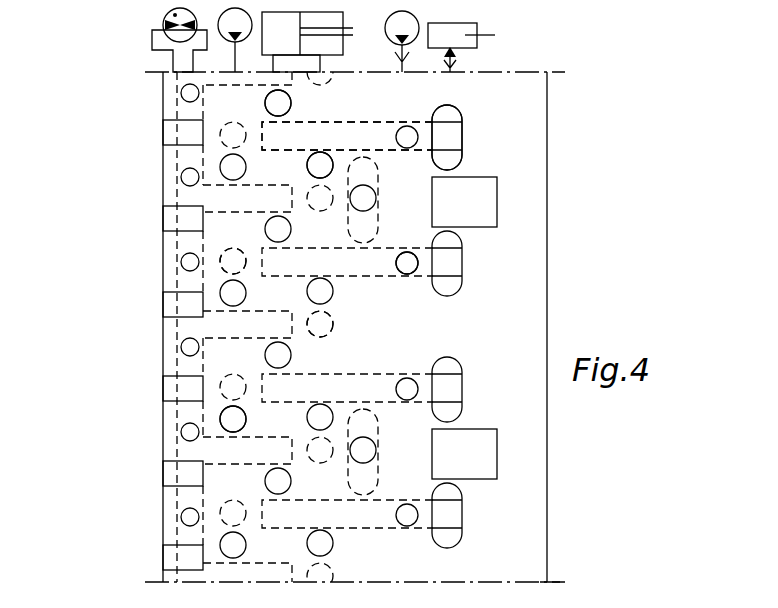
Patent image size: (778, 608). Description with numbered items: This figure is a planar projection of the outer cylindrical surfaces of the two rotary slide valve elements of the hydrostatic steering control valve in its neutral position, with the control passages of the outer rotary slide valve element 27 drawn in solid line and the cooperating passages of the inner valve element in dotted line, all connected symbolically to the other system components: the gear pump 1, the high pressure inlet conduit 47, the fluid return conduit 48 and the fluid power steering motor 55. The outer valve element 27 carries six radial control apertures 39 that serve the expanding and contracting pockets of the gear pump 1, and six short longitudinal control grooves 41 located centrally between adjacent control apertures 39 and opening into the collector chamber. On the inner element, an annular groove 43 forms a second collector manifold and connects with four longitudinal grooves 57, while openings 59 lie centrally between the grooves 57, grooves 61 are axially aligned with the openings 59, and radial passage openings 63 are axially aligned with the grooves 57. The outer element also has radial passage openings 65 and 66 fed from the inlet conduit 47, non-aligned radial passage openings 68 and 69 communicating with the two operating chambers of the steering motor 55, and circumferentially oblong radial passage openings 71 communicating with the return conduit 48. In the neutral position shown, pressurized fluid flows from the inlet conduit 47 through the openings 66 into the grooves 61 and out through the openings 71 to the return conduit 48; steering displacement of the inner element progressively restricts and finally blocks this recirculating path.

The gear pump 1 is at (163, 18).
The outer rotary slide valve element 27 is at (510, 490).
The control apertures 39 is at (190, 177).
The longitudinal control grooves 41 is at (172, 138).
The annular groove 43 is at (193, 242).
The inlet conduit 47 is at (430, 23).
The fluid return conduit 48 is at (452, 52).
The fluid power steering motor 55 is at (283, 40).
The longitudinal grooves 57 is at (213, 323).
The openings 59 is at (233, 261).
The grooves 61 is at (375, 133).
The radial passage openings 63 is at (320, 327).
The radial passage openings 65 is at (228, 420).
The radial passage openings 66 is at (407, 265).
The radial passage openings 68 is at (279, 103).
The radial passage openings 69 is at (315, 166).
The radial passage openings 71 is at (447, 113).